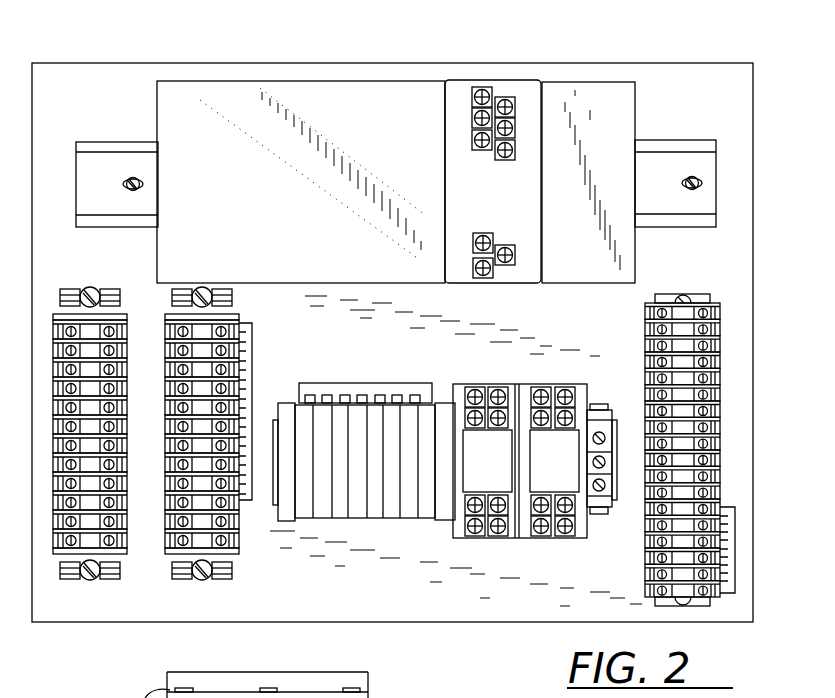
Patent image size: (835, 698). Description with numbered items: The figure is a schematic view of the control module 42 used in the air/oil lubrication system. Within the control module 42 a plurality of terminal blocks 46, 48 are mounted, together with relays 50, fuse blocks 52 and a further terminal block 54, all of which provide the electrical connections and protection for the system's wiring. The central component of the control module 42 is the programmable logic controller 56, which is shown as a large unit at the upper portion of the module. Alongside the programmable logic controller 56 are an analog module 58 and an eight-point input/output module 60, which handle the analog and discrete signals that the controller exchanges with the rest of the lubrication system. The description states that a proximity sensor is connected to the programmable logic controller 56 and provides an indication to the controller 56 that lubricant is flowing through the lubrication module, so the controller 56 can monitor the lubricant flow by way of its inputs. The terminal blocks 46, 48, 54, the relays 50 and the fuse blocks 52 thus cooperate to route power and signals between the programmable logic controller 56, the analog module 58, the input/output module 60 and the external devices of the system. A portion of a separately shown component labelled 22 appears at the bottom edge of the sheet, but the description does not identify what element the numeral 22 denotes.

The control module 42 is at (641, 52).
The terminal block 46 is at (165, 520).
The terminal block 48 is at (645, 553).
The relays 50 is at (500, 468).
The fuse blocks 52 is at (375, 503).
The terminal block 54 is at (612, 407).
The programmable logic controller 56 is at (233, 104).
The analog module 58 is at (527, 95).
The eight-point input/output module 60 is at (576, 100).
The panel 22 is at (222, 672).